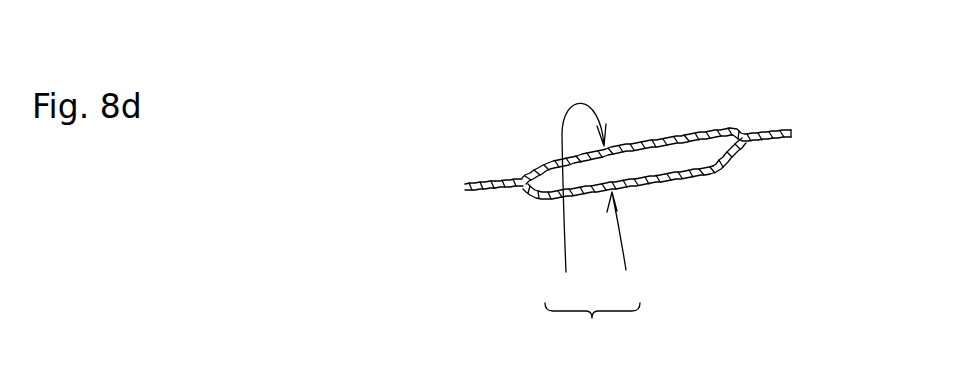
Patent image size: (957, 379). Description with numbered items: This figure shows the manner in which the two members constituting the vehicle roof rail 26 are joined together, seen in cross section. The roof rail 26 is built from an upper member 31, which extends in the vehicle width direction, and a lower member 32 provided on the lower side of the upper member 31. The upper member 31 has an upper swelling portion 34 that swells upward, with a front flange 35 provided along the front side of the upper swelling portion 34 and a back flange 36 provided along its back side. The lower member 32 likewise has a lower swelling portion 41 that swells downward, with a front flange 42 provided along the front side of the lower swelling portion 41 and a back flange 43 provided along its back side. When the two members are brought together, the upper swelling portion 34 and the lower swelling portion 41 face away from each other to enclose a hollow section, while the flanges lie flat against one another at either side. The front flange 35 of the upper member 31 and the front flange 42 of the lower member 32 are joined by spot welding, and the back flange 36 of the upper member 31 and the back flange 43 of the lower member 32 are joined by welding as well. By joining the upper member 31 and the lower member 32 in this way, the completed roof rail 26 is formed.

The roof rail 26 is at (592, 329).
The upper member 31 is at (576, 203).
The lower member 32 is at (622, 247).
The upper swelling portion 34 is at (677, 135).
The front flange 35 is at (768, 132).
The back flange 36 is at (492, 182).
The lower swelling portion 41 is at (657, 180).
The front flange 42 is at (762, 144).
The back flange 43 is at (480, 195).